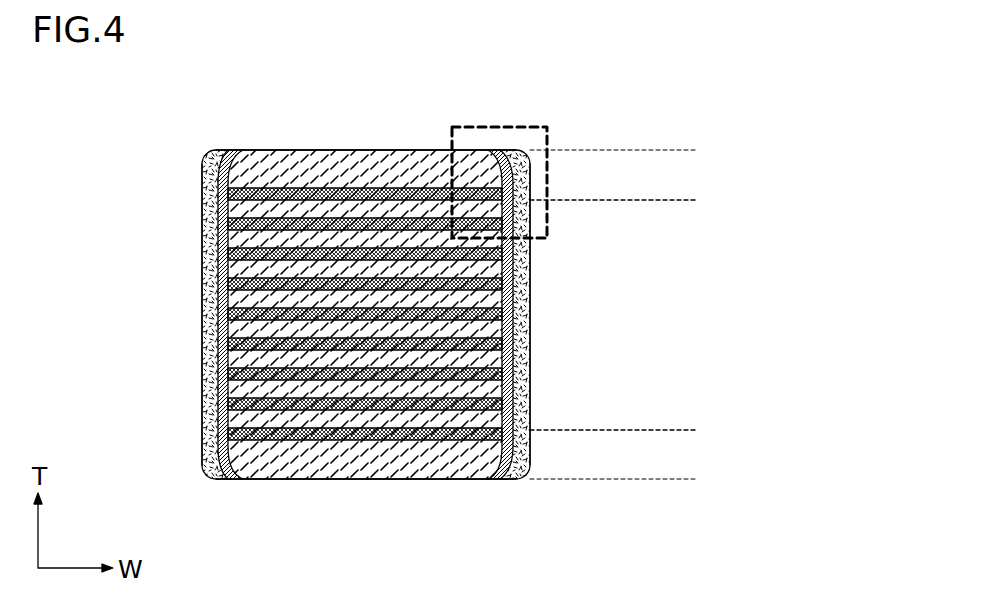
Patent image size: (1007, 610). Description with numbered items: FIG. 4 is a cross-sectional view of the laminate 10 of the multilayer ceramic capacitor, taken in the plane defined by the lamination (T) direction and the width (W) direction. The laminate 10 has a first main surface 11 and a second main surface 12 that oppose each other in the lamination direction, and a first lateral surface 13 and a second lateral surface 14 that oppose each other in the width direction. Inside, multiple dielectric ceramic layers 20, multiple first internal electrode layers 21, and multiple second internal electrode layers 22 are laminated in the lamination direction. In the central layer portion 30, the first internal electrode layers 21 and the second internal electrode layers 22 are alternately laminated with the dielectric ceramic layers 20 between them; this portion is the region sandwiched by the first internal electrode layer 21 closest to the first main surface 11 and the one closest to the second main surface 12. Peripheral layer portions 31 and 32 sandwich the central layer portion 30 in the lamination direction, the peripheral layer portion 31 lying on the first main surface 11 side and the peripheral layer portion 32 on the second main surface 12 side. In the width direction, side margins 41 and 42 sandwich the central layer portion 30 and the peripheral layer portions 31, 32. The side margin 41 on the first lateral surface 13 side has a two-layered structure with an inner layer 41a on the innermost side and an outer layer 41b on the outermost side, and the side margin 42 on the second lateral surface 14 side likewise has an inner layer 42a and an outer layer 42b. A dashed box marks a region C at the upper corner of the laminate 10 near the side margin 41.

The laminate 10 is at (178, 120).
The first main surface 11 is at (267, 150).
The second main surface 12 is at (440, 480).
The first lateral surface 13 is at (532, 365).
The second lateral surface 14 is at (202, 365).
The dielectric ceramic layers 20 is at (390, 355).
The first internal electrode layers 21 is at (377, 314).
The second internal electrode layers 22 is at (413, 284).
The central layer portion 30 is at (697, 200).
The peripheral layer portion 31 is at (697, 151).
The peripheral layer portion 32 is at (697, 430).
The side margin 41 is at (642, 230).
The inner layer 41a is at (505, 262).
The outer layer 41b is at (520, 300).
The side margin 42 is at (85, 185).
The inner layer 42a is at (223, 217).
The outer layer 42b is at (212, 257).
The region C is at (510, 171).